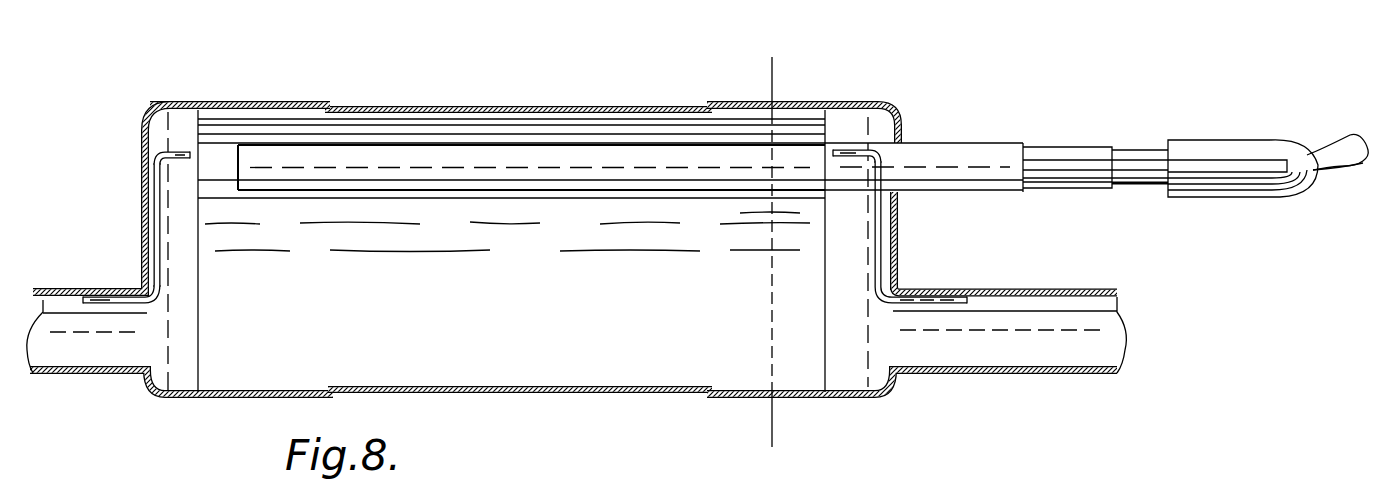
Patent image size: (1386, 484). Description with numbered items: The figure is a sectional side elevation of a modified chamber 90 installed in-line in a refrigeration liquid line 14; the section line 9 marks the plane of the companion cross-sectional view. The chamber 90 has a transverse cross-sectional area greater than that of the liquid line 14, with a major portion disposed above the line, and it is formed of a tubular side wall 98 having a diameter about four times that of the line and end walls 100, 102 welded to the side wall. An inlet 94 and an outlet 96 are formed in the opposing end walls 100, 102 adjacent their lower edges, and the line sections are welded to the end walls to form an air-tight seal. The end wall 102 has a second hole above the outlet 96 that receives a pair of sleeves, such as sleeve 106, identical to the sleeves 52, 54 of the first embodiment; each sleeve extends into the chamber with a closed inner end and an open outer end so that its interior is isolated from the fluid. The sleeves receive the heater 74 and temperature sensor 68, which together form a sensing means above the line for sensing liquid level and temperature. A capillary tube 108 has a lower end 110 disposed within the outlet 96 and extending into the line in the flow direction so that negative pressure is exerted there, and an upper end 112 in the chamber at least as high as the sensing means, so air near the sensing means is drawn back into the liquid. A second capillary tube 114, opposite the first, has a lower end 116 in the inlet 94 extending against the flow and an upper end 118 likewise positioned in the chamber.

The section line 9- 9 is at (708, 447).
The liquid line 14 is at (107, 385).
The sleeve 52 is at (1055, 152).
The sleeve 54 is at (997, 152).
The temperature sensor 68 is at (1335, 172).
The heater 74 is at (1138, 150).
The chamber 90 is at (432, 95).
The inlet 94 is at (130, 347).
The outlet 96 is at (890, 345).
The tubular side wall 98 is at (427, 390).
The end wall 100 is at (142, 245).
The end wall 102 is at (900, 257).
The sleeve 106 is at (483, 175).
The capillary tube 108 is at (878, 270).
The lower end 110 is at (960, 295).
The upper end 112 is at (837, 147).
The second capillary tube 114 is at (158, 265).
The lower end 116 is at (90, 298).
The upper end 118 is at (175, 152).